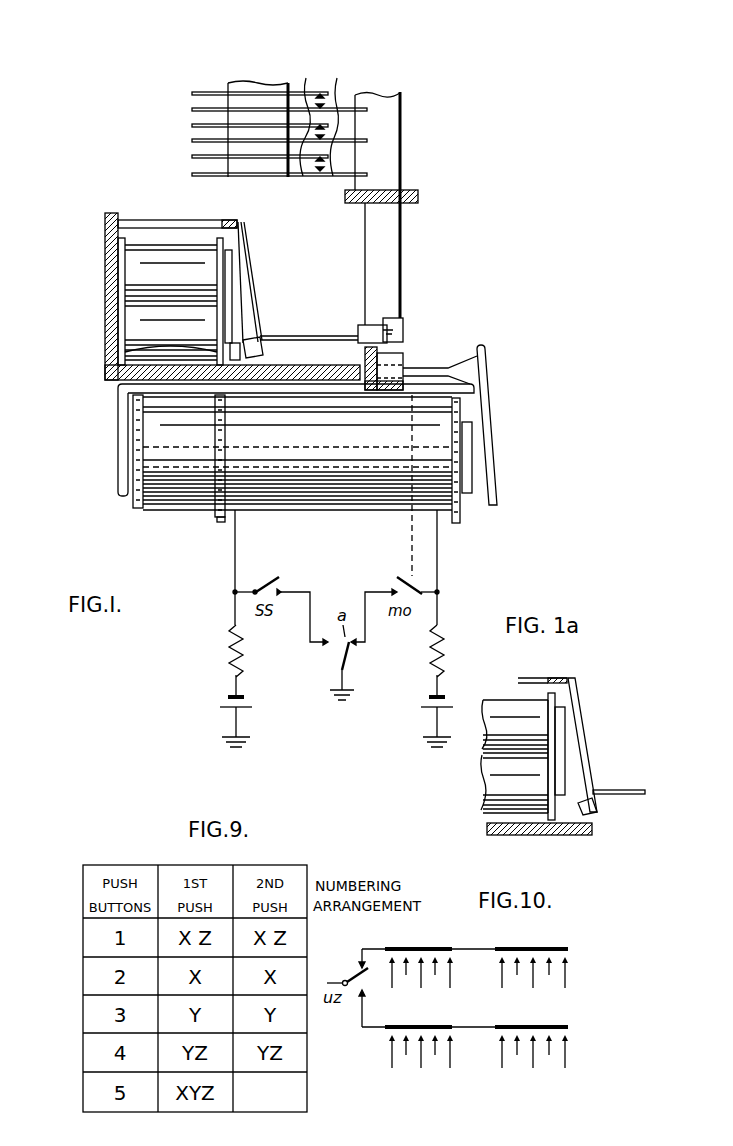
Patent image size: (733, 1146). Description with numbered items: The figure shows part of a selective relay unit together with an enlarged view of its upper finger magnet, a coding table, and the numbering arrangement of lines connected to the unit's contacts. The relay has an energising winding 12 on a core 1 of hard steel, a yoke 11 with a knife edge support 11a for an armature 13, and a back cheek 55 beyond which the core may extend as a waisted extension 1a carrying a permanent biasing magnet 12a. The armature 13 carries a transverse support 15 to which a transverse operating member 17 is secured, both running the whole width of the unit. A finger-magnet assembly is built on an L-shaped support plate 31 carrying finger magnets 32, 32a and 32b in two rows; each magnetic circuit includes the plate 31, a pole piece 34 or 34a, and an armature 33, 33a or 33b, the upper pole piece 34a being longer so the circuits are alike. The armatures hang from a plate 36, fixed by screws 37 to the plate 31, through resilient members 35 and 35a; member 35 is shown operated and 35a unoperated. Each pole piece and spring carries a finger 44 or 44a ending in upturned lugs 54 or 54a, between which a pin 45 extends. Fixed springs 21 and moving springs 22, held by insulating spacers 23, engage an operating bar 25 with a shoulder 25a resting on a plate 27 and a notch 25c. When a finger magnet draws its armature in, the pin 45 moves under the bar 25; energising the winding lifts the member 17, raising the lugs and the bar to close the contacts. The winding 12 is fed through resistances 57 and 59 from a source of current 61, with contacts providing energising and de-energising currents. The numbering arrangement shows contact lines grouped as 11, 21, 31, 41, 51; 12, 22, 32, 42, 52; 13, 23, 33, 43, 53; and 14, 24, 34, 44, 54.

In FIG. 1, the core 1 is at (318, 472).
In FIG. 1, the core extension 1a is at (175, 446).
In FIG. 1, the yoke 11 is at (122, 422).
In FIG. 10, the yoke 11 is at (391, 1062).
In FIG. 1, the knife edge support 11a is at (485, 366).
In FIG. 1, the energising winding 12 is at (378, 490).
In FIG. 10, the energising winding 12 is at (391, 980).
In FIG. 1, the permanent biasing magnet 12a is at (178, 480).
In FIG. 1, the armature 13 is at (490, 432).
In FIG. 10, the armature 13 is at (501, 980).
In FIG. 10, the contact 14 is at (501, 1062).
In FIG. 1, the transverse support 15 is at (465, 392).
In FIG. 1, the transverse operating member 17 is at (366, 359).
In FIG. 1, the fixed contact springs 21 is at (300, 130).
In FIG. 10, the fixed contact springs 21 is at (406, 1054).
In FIG. 1, the moving contact springs 22 is at (336, 115).
In FIG. 10, the moving contact springs 22 is at (406, 974).
In FIG. 1, the insulating spacers 23 is at (250, 148).
In FIG. 10, the insulating spacers 23 is at (517, 974).
In FIG. 10, the contact 24 is at (517, 1054).
In FIG. 1, the operating bar 25 is at (390, 135).
In FIG. 1, the shoulder 25a is at (349, 192).
In FIG. 1, the notch 25c is at (403, 322).
In FIG. 1, the plate 27 is at (401, 202).
In FIG. 1, the L-shaped support plate 31 is at (108, 287).
In FIG. 10, the L-shaped support plate 31 is at (421, 1062).
In FIG. 1, the finger magnet 32 is at (138, 322).
In FIG. 10, the finger magnet 32 is at (421, 980).
In FIG. 1, the finger magnet 32a is at (148, 262).
In FIG. 1A, the finger magnet 32a is at (500, 710).
In FIG. 1A, the finger magnet 32b is at (488, 782).
In FIG. 1, the armature 33 is at (218, 352).
In FIG. 10, the armature 33 is at (533, 980).
In FIG. 1, the armature 33a is at (260, 352).
In FIG. 1A, the armature 33b is at (597, 808).
In FIG. 1, the pole piece 34 is at (232, 325).
In FIG. 10, the pole piece 34 is at (533, 1062).
In FIG. 1, the pole piece 34a is at (231, 262).
In FIG. 1A, the pole piece 34a is at (565, 730).
In FIG. 1, the resilient member 35 is at (241, 285).
In FIG. 1, the resilient member 35a is at (251, 308).
In FIG. 1A, the resilient member 35a is at (576, 700).
In FIG. 1, the plate 36 is at (229, 221).
In FIG. 1, the screws 37 is at (168, 220).
In FIG. 10, the contact 41 is at (435, 1054).
In FIG. 10, the contact 42 is at (435, 974).
In FIG. 10, the contact 43 is at (549, 974).
In FIG. 1, the finger 44 is at (320, 338).
In FIG. 10, the finger 44 is at (549, 1054).
In FIG. 1, the finger 44a is at (330, 335).
In FIG. 1A, the finger 44a is at (615, 790).
In FIG. 1, the pin 45 is at (385, 342).
In FIG. 10, the contact 51 is at (451, 1062).
In FIG. 10, the contact 52 is at (451, 980).
In FIG. 10, the contact 53 is at (566, 980).
In FIG. 1, the upturned lug 54 is at (395, 330).
In FIG. 10, the upturned lug 54 is at (566, 1062).
In FIG. 1, the upturned lug 54a is at (398, 335).
In FIG. 1, the back cheek 55 is at (221, 522).
In FIG. 1, the resistance 57 is at (228, 652).
In FIG. 1, the resistance 59 is at (445, 650).
In FIG. 1, the source of current 61 is at (252, 708).